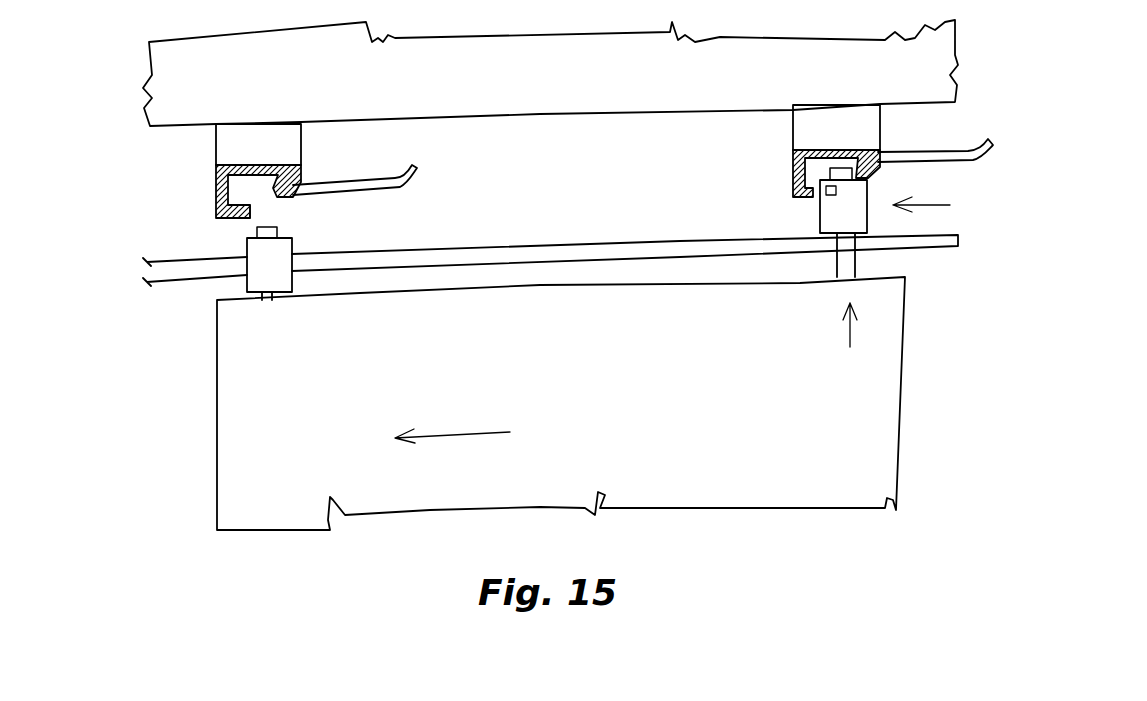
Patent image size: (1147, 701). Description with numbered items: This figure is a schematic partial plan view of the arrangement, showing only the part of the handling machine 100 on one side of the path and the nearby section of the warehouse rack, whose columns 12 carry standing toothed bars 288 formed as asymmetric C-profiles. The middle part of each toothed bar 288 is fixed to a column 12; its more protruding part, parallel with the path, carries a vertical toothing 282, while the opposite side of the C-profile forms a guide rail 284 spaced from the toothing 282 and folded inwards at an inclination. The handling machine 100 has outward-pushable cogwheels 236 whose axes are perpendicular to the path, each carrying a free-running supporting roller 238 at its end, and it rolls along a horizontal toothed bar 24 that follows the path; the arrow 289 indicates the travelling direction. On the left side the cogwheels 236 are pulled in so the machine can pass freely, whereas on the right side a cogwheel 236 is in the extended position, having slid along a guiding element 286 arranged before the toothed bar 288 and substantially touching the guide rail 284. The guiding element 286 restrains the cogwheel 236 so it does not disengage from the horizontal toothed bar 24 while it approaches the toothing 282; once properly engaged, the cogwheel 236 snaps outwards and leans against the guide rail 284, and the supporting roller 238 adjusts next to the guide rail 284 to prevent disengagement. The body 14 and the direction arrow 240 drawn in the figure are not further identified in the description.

The column 12 is at (230, 152).
The body 14 is at (553, 95).
The horizontal toothed bar 24 is at (568, 246).
The handling machine 100 is at (252, 415).
The cogwheel 236 is at (280, 257).
The supporting roller 238 is at (276, 231).
The direction of insertion 240 is at (948, 139).
The toothing 282 is at (248, 219).
The guide rail 284 is at (266, 166).
The guiding element 286 is at (368, 182).
The toothed bar 288 is at (215, 198).
The arrow 289 is at (478, 413).